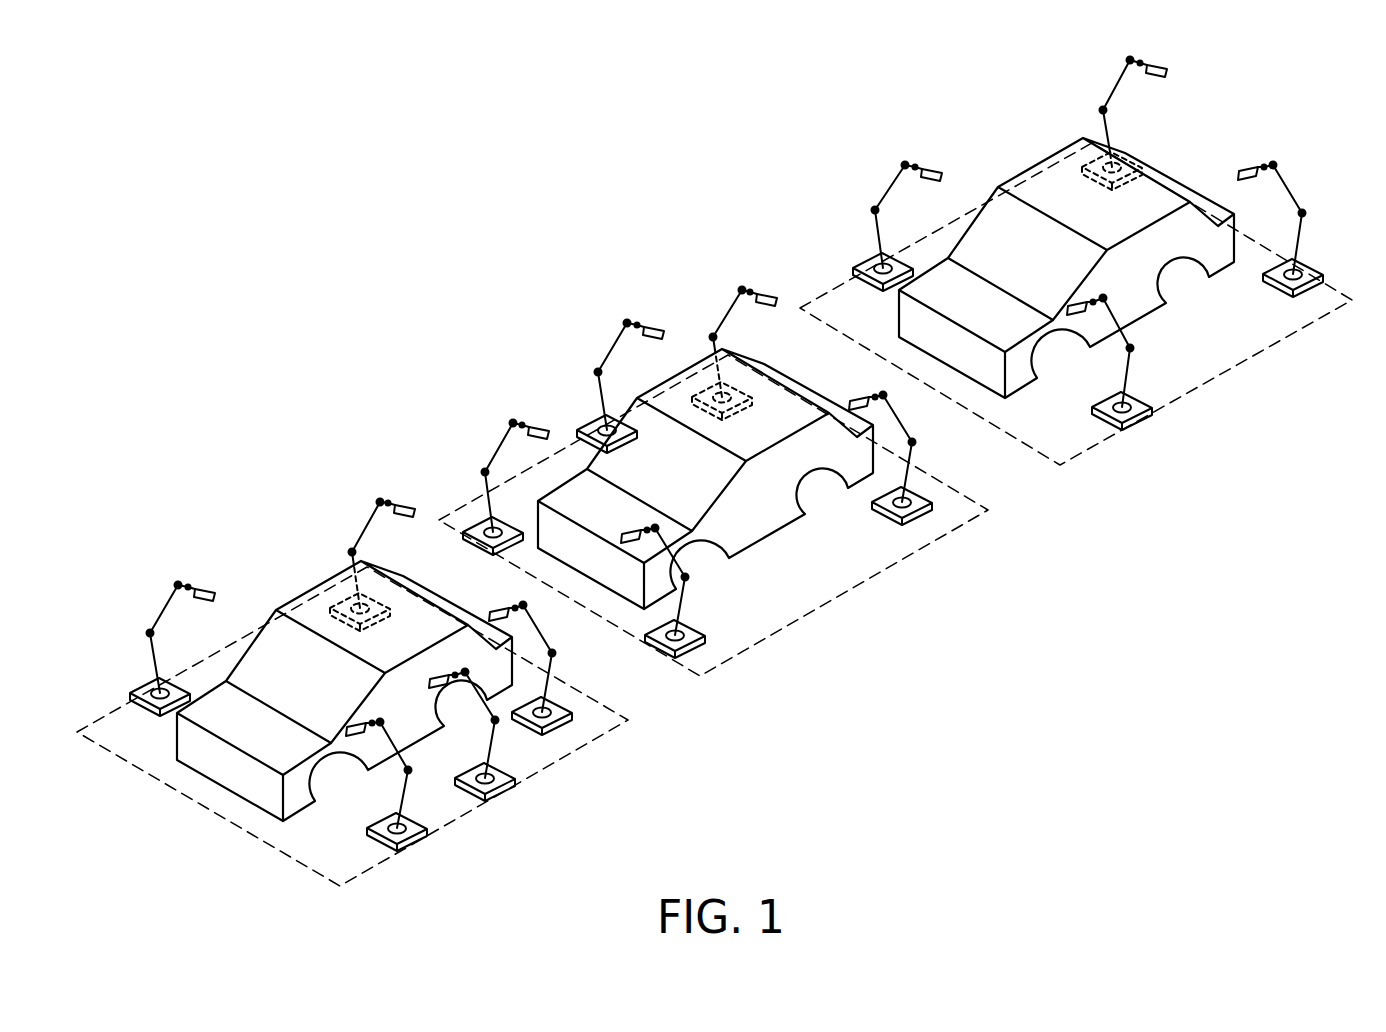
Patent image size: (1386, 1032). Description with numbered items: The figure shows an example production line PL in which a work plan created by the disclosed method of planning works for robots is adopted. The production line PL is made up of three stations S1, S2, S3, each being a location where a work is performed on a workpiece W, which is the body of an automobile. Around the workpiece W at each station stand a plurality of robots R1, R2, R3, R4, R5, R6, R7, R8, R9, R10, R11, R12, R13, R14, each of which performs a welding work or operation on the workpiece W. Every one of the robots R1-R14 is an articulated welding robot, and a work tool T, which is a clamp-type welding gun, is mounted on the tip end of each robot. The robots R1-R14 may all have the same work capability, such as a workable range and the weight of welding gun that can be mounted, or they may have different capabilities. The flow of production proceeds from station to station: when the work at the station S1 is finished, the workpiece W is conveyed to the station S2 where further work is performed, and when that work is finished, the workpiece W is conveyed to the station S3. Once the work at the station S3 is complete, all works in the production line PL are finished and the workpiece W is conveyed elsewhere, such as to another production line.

The production line PL is at (442, 295).
The station S1 is at (1217, 378).
The station S2 is at (832, 600).
The station S3 is at (497, 798).
The workpiece W is at (1177, 182).
The work tool T is at (1153, 68).
The robot R1 is at (1118, 82).
The robot R2 is at (893, 180).
The robot R3 is at (1303, 228).
The robot R4 is at (1122, 333).
The robot R5 is at (733, 303).
The robot R6 is at (619, 337).
The robot R7 is at (498, 448).
The robot R8 is at (910, 455).
The robot R9 is at (680, 608).
The robot R10 is at (364, 528).
The robot R11 is at (162, 613).
The robot R12 is at (550, 667).
The robot R13 is at (490, 748).
The robot R14 is at (400, 758).